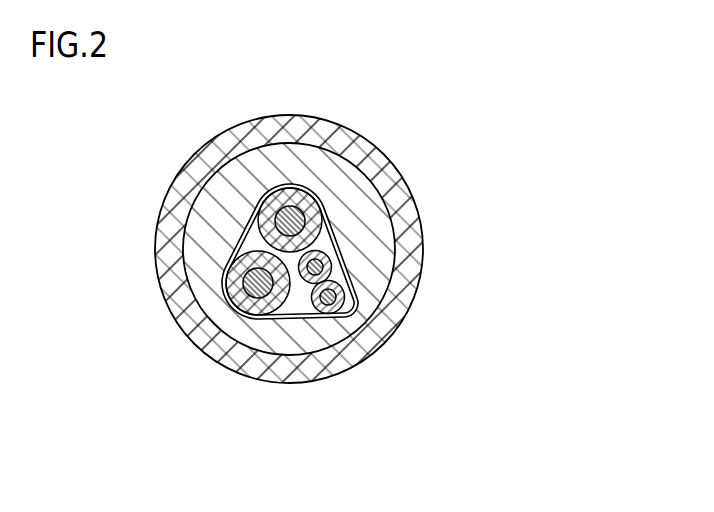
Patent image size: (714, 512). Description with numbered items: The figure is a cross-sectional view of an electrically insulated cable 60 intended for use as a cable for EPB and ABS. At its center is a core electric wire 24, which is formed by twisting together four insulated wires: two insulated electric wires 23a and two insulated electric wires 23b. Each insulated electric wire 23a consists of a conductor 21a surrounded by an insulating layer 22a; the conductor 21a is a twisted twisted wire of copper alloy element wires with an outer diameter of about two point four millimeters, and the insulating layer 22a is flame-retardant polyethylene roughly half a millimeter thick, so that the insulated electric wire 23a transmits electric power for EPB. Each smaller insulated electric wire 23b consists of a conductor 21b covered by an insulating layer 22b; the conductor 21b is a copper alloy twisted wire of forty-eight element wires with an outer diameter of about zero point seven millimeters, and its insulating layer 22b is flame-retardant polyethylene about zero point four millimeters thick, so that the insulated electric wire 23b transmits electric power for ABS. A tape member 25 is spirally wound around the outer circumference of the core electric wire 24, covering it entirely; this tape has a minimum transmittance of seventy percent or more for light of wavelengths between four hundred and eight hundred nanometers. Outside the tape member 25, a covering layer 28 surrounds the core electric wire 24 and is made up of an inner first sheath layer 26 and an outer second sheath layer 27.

The electrically insulated cable 60 is at (343, 276).
The covering layer 28 is at (289, 300).
The second sheath layer 27 is at (262, 372).
The first sheath layer 26 is at (235, 328).
The tape member 25 is at (252, 206).
The core electric wire 24 is at (406, 252).
The insulated electric wire 23a is at (386, 219).
The insulated electric wire 23b is at (423, 316).
The conductor 21a is at (304, 219).
The insulating layer 22a is at (312, 233).
The conductor 21b is at (323, 265).
The insulating layer 22b is at (331, 277).